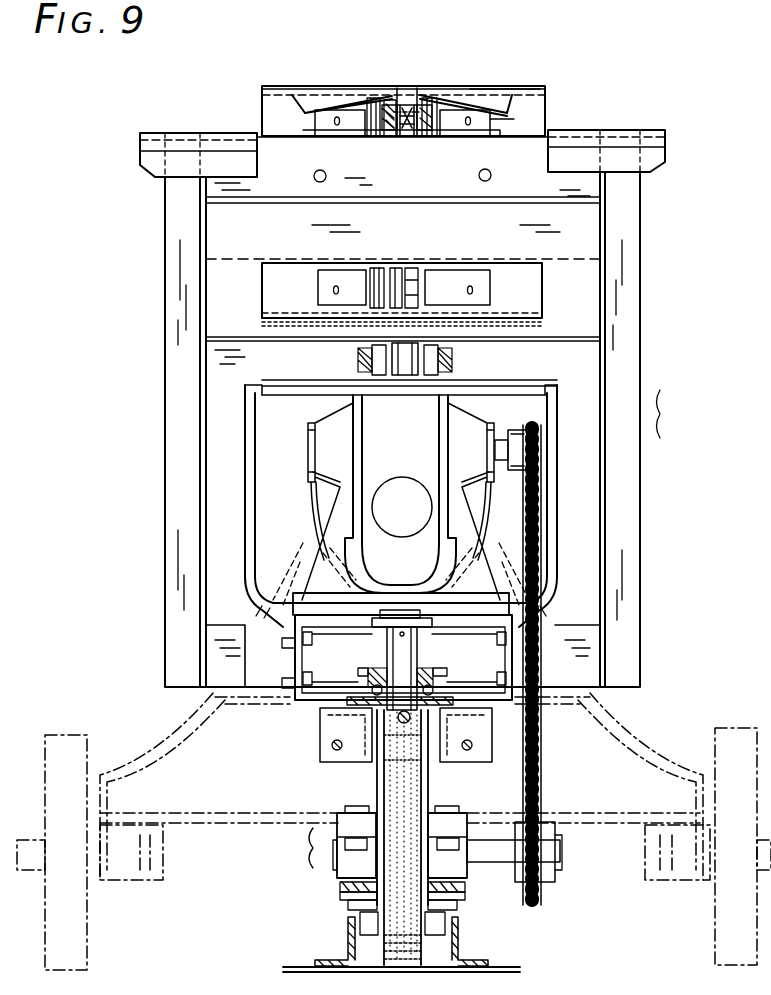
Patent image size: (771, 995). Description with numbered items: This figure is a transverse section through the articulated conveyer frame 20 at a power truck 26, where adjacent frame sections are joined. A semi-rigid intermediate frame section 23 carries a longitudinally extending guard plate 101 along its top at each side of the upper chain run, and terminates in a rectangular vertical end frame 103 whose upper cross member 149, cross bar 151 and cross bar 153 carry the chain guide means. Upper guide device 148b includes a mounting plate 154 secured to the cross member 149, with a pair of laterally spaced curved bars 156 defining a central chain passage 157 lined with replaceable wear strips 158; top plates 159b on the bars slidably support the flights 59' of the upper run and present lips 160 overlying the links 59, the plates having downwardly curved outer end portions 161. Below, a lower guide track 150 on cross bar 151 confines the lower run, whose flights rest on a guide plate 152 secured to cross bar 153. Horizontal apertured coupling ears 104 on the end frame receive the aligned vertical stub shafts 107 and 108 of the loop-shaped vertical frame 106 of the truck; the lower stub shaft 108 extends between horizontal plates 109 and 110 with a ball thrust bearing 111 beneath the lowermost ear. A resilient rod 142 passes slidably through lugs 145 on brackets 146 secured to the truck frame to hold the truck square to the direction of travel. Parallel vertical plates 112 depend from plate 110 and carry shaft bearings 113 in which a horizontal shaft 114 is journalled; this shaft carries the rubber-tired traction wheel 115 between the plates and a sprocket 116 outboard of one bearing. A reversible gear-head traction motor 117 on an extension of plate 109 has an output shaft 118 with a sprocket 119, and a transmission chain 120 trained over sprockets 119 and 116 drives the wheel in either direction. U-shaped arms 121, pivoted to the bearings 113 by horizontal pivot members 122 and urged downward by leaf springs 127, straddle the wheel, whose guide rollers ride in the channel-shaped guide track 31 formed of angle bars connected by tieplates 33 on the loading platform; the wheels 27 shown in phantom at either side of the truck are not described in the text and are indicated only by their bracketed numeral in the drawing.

The guard plate 101 is at (652, 160).
The frame section 23 is at (632, 525).
The articulated conveyer frame 20 is at (677, 414).
The upper cross member 149 is at (585, 183).
The cross bar 151 is at (585, 222).
The cross bar 153 is at (585, 350).
The vertical end frame 103 is at (590, 643).
The flight 59' is at (391, 92).
The top plate 159b is at (330, 95).
The lip 160 is at (412, 88).
The outer end portion 161 is at (520, 105).
The guide device 148b is at (495, 119).
The curved bar 156 is at (315, 120).
The mounting plate 154 is at (490, 132).
The chain passage 157 is at (384, 117).
The wear strip 158 is at (390, 133).
The chain conveyer link 59 is at (414, 139).
The lower guide track 150 is at (300, 278).
The guide plate 152 is at (320, 320).
The upper stub shaft 107 is at (345, 350).
The coupling ear 104 is at (445, 352).
The motor sprocket 119 is at (515, 430).
The output shaft 118 is at (505, 432).
The loop-shaped vertical frame 106 is at (248, 580).
The traction motor 117 is at (318, 508).
The lower horizontal plate 110 is at (302, 700).
The upper horizontal plate 109 is at (372, 622).
The lower stub shaft 108 is at (417, 640).
The ball thrust bearing 111 is at (372, 688).
The lug 145 is at (398, 722).
The bracket 146 is at (330, 718).
The resilient rod 142 is at (510, 722).
The vertical plate 112 is at (377, 800).
The power truck 26 is at (298, 848).
The shaft bearing 113 is at (352, 855).
The horizontal shaft 114 is at (500, 864).
The traction wheel sprocket 116 is at (548, 880).
The transmission chain 120 is at (543, 752).
The pivot member 122 is at (340, 887).
The U-shaped arm 121 is at (340, 897).
The leaf spring 127 is at (348, 906).
The guide track 31 is at (480, 958).
The tieplate 33 is at (512, 971).
The traction wheel 115 is at (404, 966).
The wheel 27 is at (100, 905).